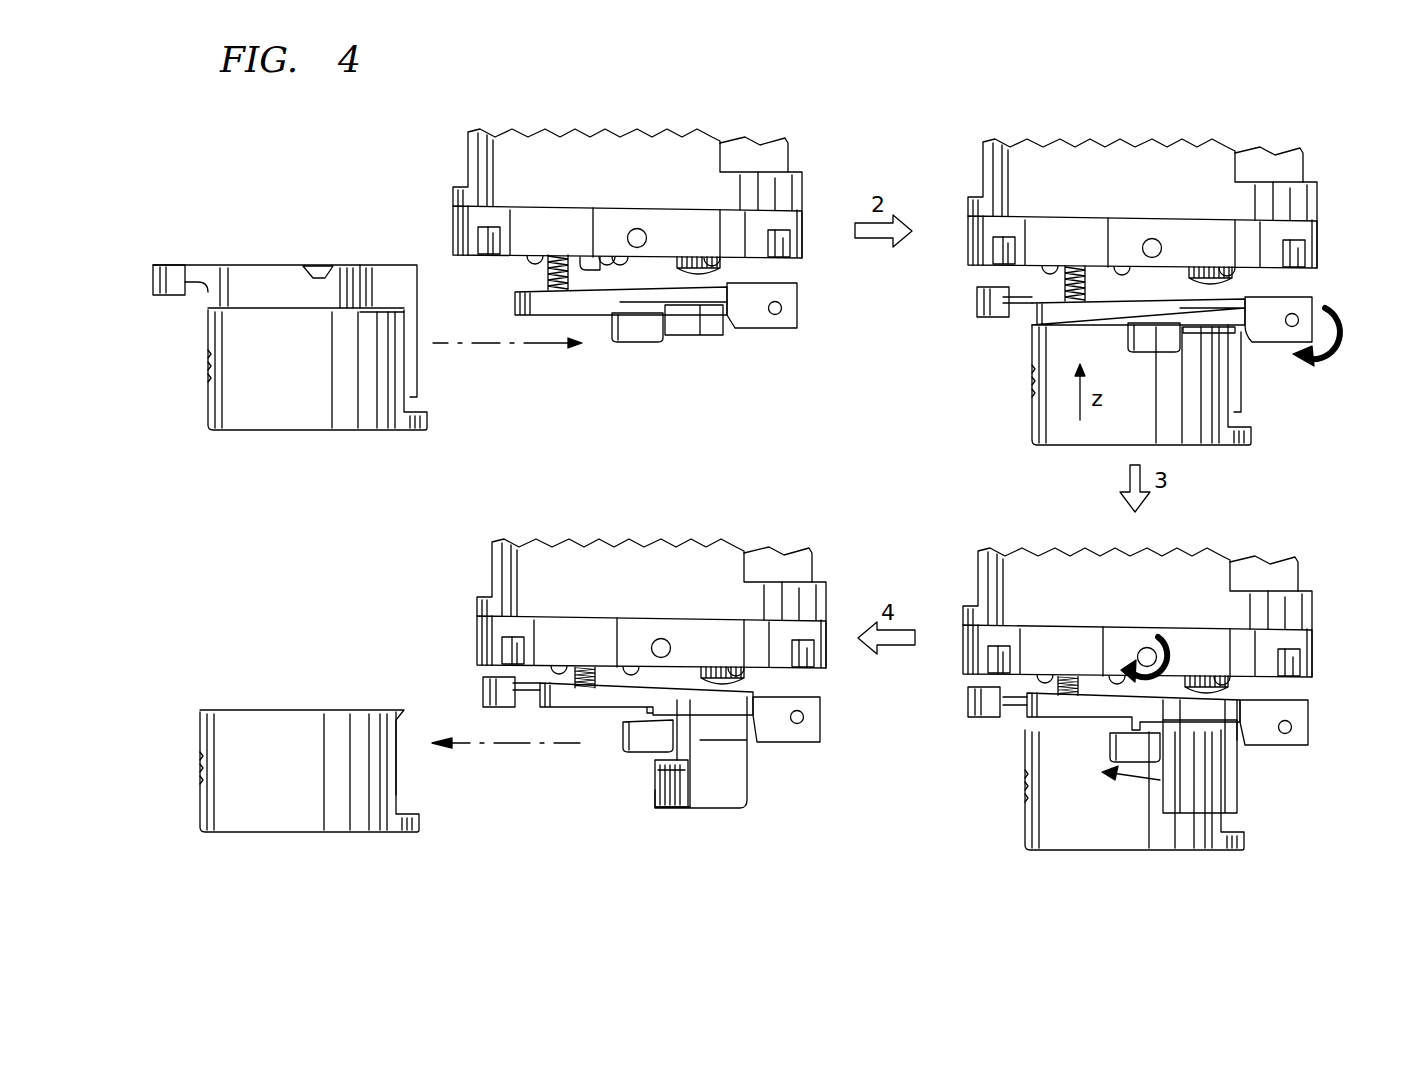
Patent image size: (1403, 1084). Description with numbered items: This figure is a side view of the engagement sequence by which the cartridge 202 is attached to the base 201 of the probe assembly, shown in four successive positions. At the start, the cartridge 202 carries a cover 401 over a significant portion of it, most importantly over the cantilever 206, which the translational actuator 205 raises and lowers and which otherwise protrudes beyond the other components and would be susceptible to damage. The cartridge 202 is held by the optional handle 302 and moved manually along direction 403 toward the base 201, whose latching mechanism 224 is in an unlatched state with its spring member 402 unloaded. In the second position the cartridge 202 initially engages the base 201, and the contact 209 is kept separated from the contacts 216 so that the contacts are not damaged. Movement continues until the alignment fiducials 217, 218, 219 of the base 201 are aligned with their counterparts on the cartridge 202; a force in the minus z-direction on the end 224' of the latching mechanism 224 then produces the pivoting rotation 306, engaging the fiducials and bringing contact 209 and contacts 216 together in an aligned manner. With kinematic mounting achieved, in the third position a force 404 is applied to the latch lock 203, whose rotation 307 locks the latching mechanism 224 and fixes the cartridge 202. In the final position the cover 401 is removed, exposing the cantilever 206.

The base 201 is at (624, 216).
The cartridge 202 is at (250, 290).
The latch lock 203 is at (640, 345).
The translational actuator 205 is at (672, 785).
The cantilever 206 is at (652, 806).
The contact 209 is at (678, 269).
The contacts 216 is at (385, 265).
The alignment fiducial 217 is at (587, 262).
The alignment fiducial 218 is at (712, 269).
The alignment fiducial 219 is at (535, 268).
The latching mechanism 224 is at (980, 466).
The end of the latching mechanism 224' is at (880, 517).
The handle 302 is at (170, 292).
The rotation 306 is at (1337, 352).
The rotation of the latch lock 307 is at (1125, 668).
The cover 401 is at (228, 428).
The spring member 402 is at (557, 290).
The direction 403 is at (495, 348).
The force 404 is at (1130, 790).